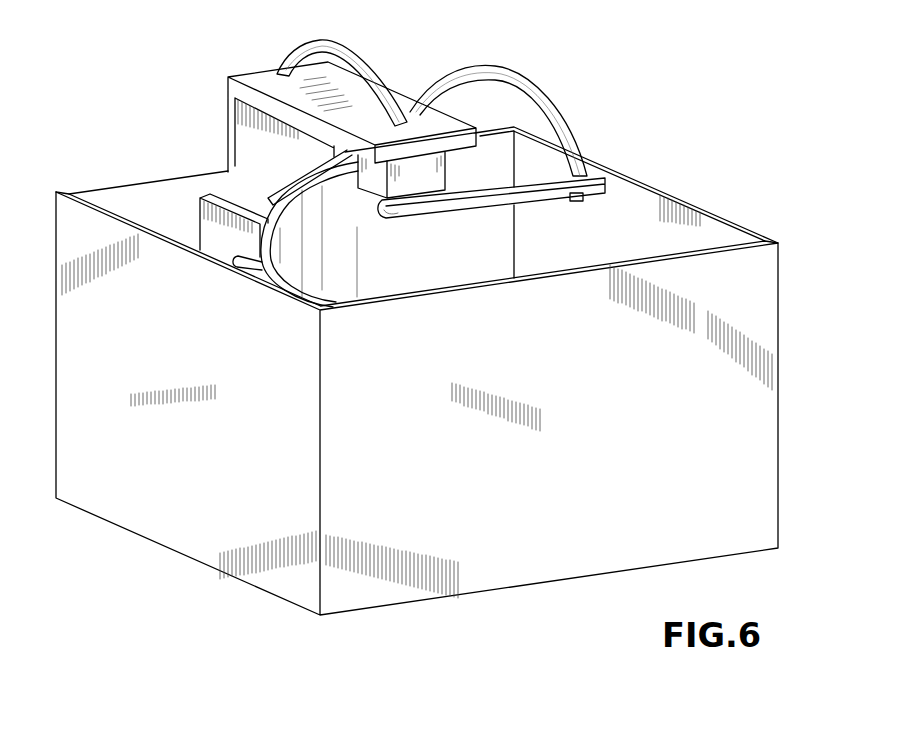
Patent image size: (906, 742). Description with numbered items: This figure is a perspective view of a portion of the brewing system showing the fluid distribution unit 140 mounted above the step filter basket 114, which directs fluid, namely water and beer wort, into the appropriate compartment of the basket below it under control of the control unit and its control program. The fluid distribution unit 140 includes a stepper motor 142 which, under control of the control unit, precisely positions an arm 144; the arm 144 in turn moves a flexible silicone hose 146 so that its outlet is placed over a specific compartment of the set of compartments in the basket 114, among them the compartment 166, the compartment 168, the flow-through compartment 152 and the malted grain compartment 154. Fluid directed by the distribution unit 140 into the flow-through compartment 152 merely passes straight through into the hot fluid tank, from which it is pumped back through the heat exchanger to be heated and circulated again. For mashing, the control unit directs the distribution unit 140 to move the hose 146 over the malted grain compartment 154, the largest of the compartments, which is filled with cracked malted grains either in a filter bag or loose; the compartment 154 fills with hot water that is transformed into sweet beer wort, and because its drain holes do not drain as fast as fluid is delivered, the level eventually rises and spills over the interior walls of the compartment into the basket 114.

The step filter basket 114 is at (740, 221).
The fluid distribution unit 140 is at (427, 53).
The stepper motor 142 is at (413, 182).
The arm 144 is at (595, 182).
The flexible silicone hose 146 is at (550, 85).
The flow-through compartment 152 is at (240, 258).
The malted grain compartment 154 is at (642, 213).
The compartment 166 is at (238, 197).
The compartment 168 is at (147, 203).